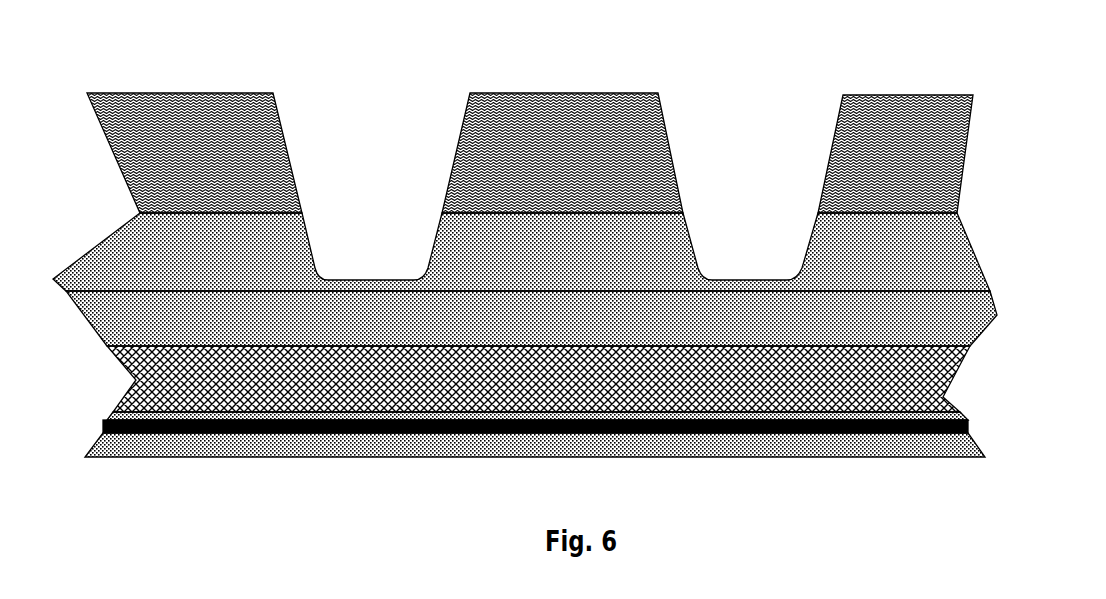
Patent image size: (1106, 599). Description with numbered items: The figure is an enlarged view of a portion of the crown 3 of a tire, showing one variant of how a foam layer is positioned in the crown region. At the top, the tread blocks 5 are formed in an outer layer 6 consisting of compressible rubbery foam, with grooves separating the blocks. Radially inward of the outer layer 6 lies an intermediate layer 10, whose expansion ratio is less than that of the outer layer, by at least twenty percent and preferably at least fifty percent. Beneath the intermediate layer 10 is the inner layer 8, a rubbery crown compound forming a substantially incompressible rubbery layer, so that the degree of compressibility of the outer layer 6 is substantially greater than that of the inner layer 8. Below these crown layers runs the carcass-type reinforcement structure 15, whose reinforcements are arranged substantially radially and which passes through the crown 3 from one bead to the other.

The tread blocks 5 is at (530, 111).
The outer layer 6 is at (562, 153).
The intermediate layer 10 is at (653, 232).
The inner layer 8 is at (952, 313).
The crown 3 is at (932, 377).
The reinforcement structure 15 is at (968, 422).